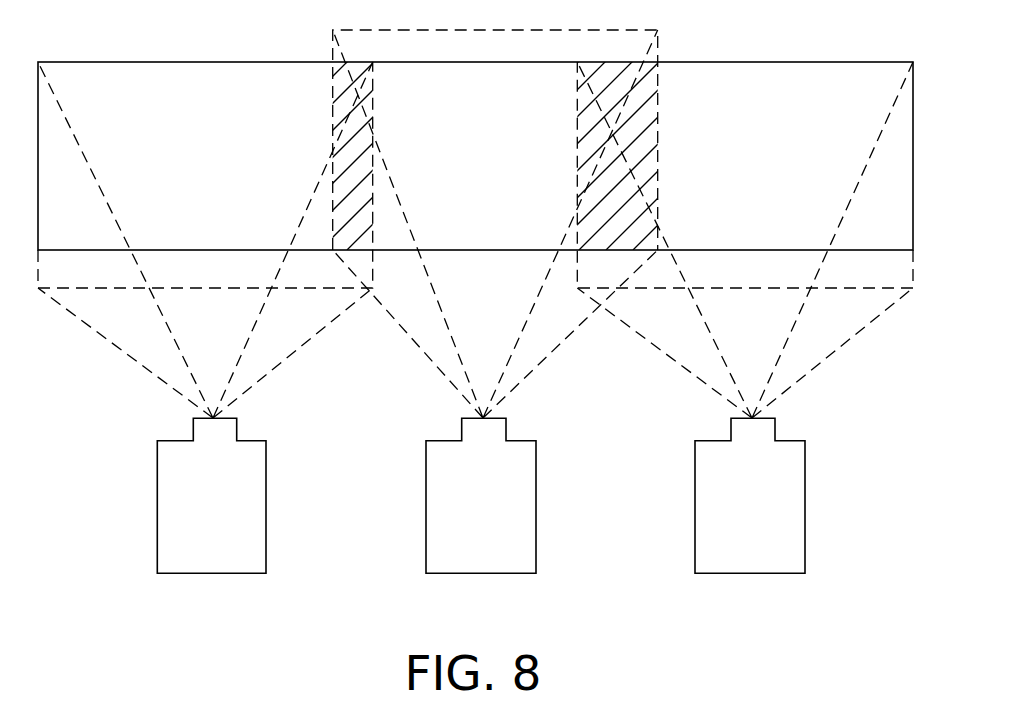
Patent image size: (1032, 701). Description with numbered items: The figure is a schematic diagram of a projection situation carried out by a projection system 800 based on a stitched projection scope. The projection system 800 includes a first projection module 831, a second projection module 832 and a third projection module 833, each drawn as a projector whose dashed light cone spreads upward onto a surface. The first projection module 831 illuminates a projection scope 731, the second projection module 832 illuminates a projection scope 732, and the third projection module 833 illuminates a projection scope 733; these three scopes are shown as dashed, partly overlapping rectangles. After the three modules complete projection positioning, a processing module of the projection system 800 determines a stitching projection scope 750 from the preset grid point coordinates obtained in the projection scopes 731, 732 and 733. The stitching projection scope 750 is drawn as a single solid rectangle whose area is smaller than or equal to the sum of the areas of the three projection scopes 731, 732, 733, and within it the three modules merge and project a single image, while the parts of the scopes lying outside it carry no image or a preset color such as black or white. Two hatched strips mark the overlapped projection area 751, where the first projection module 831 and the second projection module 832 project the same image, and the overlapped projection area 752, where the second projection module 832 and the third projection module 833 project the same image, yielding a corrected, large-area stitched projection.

The projection system 800 is at (897, 636).
The stitching projection scope 750 is at (813, 62).
The overlapped projection area 751 is at (373, 110).
The overlapped projection area 752 is at (658, 118).
The projection scope 731 is at (90, 291).
The projection scope 732 is at (658, 50).
The projection scope 733 is at (860, 291).
The first projection module 831 is at (211, 574).
The second projection module 832 is at (481, 574).
The third projection module 833 is at (750, 574).